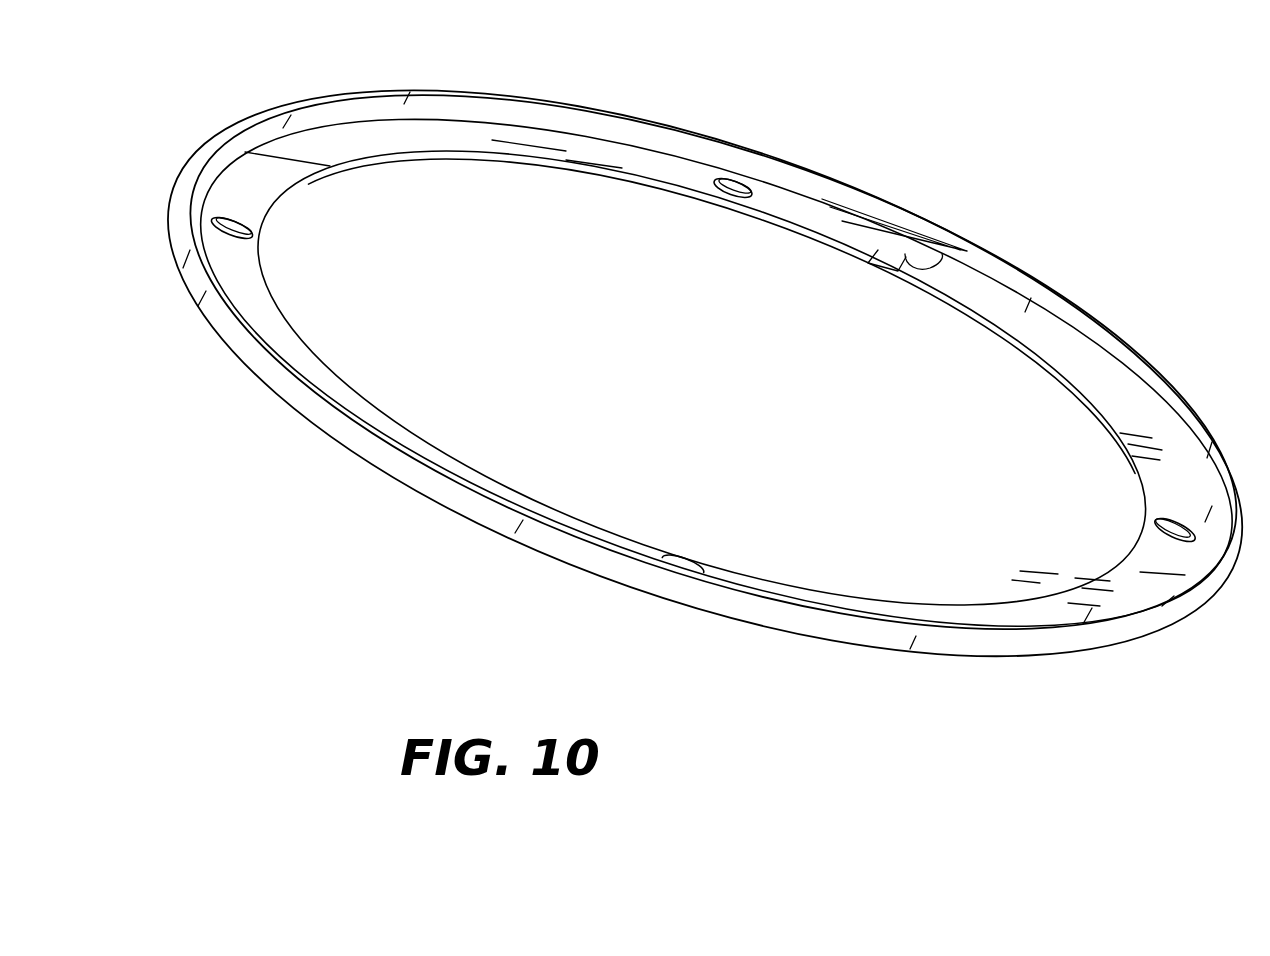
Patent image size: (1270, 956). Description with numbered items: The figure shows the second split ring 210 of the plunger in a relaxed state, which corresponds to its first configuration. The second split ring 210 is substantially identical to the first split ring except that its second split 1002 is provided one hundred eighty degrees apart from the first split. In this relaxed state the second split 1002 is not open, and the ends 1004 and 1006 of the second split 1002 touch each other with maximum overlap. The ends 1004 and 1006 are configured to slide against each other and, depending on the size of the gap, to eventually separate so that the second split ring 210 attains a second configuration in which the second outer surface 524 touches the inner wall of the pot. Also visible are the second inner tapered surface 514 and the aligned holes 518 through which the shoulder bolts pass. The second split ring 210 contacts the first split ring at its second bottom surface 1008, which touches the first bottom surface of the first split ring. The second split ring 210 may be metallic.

The second split ring 210 is at (684, 386).
The second inner tapered surface 514 is at (503, 108).
The aligned holes 518 is at (253, 227).
The second outer surface 524 is at (814, 628).
The second split 1002 is at (858, 272).
The end of the second split 1004 is at (896, 238).
The end of the second split 1006 is at (930, 268).
The second bottom surface 1008 is at (1013, 698).